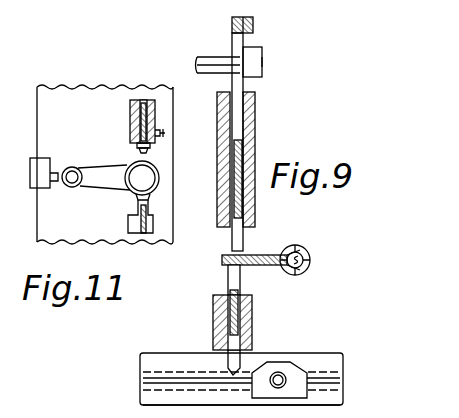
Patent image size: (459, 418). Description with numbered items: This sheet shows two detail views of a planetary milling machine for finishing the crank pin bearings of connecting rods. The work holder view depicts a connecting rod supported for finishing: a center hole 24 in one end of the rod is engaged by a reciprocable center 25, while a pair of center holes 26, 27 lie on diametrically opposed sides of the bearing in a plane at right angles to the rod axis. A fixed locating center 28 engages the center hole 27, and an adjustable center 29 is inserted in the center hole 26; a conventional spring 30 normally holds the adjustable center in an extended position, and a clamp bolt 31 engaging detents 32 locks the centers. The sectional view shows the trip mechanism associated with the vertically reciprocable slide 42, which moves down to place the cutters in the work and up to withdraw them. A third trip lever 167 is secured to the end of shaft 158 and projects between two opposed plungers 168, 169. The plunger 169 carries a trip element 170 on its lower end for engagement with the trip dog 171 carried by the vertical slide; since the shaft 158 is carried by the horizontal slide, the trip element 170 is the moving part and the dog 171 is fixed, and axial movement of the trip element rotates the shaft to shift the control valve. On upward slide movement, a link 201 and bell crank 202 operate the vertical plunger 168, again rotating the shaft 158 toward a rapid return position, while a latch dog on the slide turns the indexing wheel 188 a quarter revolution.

In FIG. 9, the link 201 is at (247, 30).
In FIG. 9, the bell crank 202 is at (233, 58).
In FIG. 9, the vertical plunger 168 is at (248, 242).
In FIG. 9, the third trip lever 167 is at (262, 266).
In FIG. 9, the shaft 158 is at (311, 261).
In FIG. 9, the plunger 169 is at (226, 290).
In FIG. 9, the trip element 170 is at (240, 368).
In FIG. 9, the trip dog 171 is at (295, 372).
In FIG. 9, the vertically reciprocable slide 42 is at (330, 400).
In FIG. 9, the indexing wheel 188 is at (340, 412).
In FIG. 11, the center hole 24 is at (50, 160).
In FIG. 11, the reciprocable center 25 is at (44, 180).
In FIG. 11, the center hole 26 is at (140, 151).
In FIG. 11, the center hole 27 is at (136, 194).
In FIG. 11, the fixed locating center 28 is at (128, 226).
In FIG. 11, the adjustable center 29 is at (136, 144).
In FIG. 11, the spring 30 is at (131, 110).
In FIG. 11, the clamp bolt 31 is at (166, 133).
In FIG. 11, the detents 32 is at (138, 124).